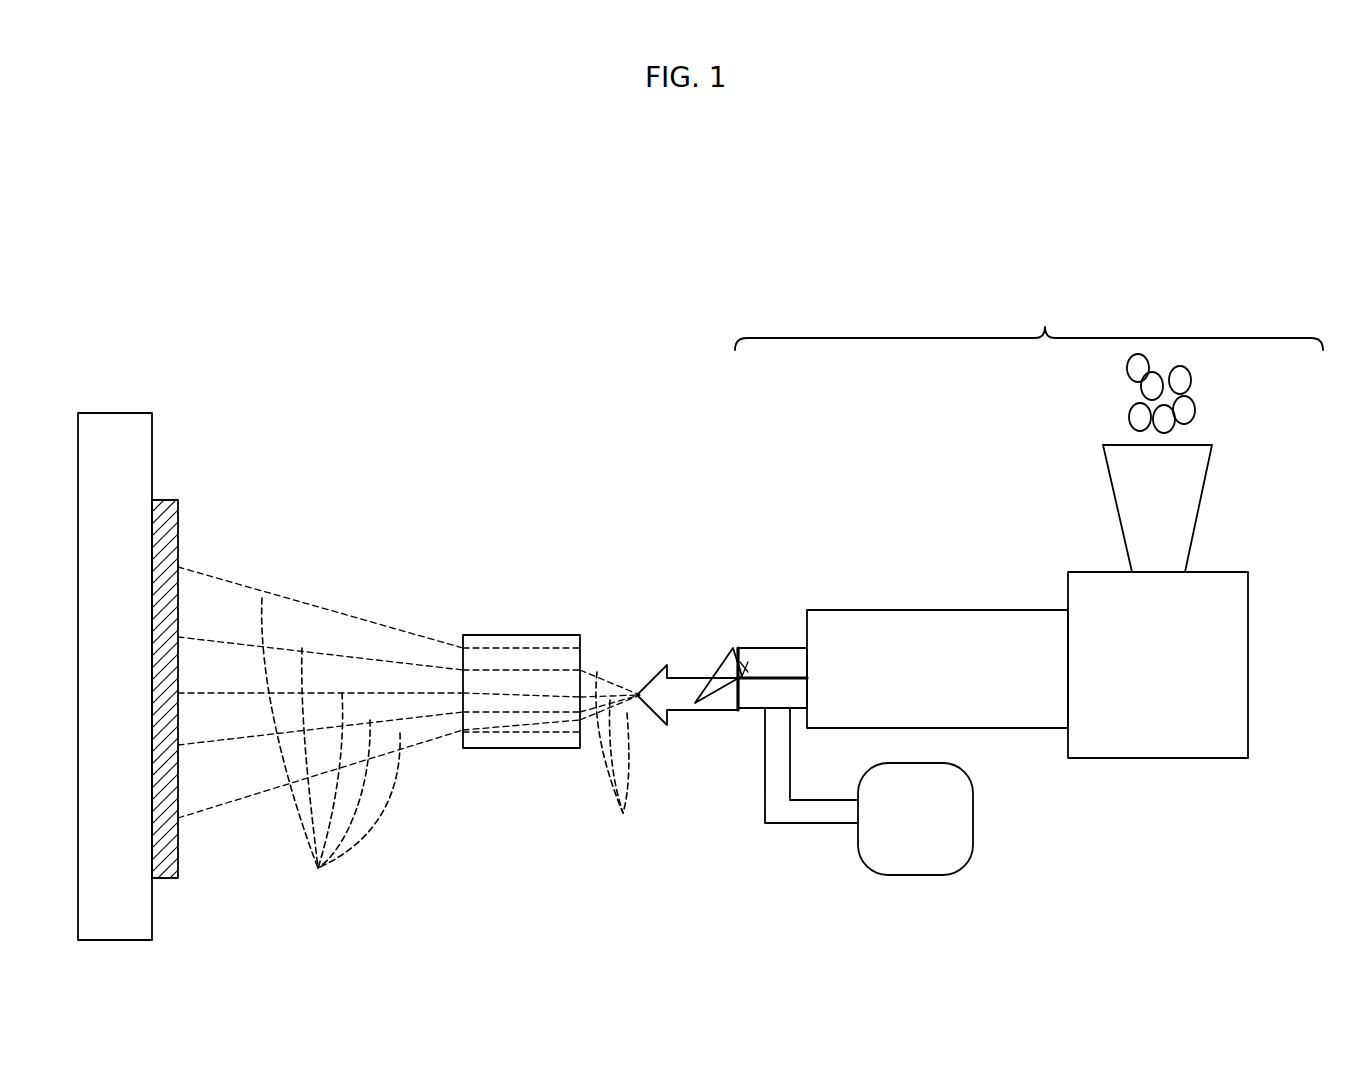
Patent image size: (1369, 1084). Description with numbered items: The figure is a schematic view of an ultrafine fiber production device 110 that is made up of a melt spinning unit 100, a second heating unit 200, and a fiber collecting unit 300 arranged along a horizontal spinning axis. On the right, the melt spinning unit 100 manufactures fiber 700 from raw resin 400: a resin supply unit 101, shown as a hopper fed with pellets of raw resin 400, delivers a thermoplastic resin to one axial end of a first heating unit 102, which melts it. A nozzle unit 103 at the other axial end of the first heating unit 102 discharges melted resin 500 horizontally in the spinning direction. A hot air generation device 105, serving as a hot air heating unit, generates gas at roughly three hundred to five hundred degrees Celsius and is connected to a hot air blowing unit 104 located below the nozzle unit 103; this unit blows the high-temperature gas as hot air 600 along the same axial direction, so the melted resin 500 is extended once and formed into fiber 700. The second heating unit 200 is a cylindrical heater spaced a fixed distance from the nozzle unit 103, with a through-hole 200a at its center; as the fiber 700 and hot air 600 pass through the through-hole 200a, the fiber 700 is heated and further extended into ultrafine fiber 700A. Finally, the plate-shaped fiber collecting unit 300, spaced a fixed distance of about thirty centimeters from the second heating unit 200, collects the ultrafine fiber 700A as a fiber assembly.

The melt spinning unit 100 is at (1029, 319).
The resin supply unit 101 is at (1178, 500).
The first heating unit 102 is at (947, 638).
The nozzle unit 103 is at (775, 657).
The hot air blowing unit 104 is at (757, 695).
The hot air generation device 105 is at (958, 840).
The ultrafine fiber production device 110 is at (471, 400).
The second heating unit 200 is at (540, 665).
The through-hole 200a is at (488, 632).
The fiber collecting unit 300 is at (116, 438).
The raw resin 400 is at (1183, 378).
The melted resin 500 is at (715, 673).
The hot air 600 is at (697, 707).
The fiber 700 is at (625, 762).
The ultrafine fiber 700A is at (331, 754).